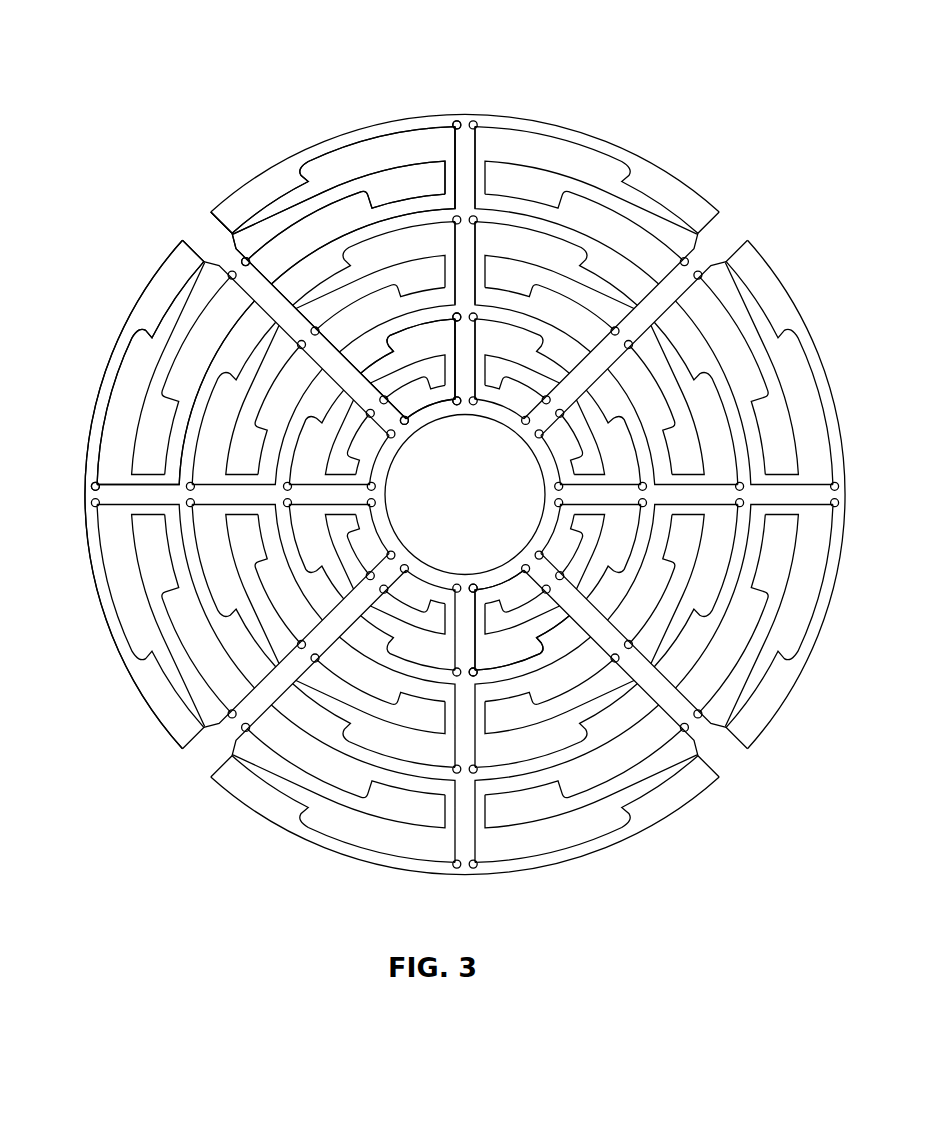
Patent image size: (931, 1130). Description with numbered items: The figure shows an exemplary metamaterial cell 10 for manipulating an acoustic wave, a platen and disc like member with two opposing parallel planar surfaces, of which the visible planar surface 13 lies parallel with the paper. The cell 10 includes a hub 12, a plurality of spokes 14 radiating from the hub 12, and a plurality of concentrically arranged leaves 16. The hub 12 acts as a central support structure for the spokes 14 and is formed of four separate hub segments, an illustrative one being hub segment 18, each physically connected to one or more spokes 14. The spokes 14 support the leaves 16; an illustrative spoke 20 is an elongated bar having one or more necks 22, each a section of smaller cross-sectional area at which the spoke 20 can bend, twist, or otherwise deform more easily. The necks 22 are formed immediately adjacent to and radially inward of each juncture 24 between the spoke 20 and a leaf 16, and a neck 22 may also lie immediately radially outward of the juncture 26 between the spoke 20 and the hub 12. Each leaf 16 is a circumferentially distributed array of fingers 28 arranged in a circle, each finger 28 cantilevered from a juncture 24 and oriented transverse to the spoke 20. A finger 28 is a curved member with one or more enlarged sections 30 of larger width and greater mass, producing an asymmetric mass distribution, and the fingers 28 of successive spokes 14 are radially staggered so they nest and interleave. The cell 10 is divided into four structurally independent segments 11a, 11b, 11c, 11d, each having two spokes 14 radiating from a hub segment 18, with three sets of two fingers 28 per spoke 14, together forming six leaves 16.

The metamaterial cell 10 is at (433, 453).
The segment 11a is at (600, 148).
The segment 11b is at (766, 716).
The segment 11c is at (320, 832).
The segment 11d is at (105, 388).
The hub 12 is at (428, 557).
The planar surface 13 is at (700, 196).
The spokes 14 is at (448, 156).
The leaves 16 is at (289, 138).
The hub segment 18 is at (513, 562).
The spoke 20 is at (225, 235).
The neck 22 is at (256, 263).
The juncture 24 is at (243, 266).
The juncture 26 is at (397, 436).
The fingers 28 is at (113, 338).
The enlarged section 30 is at (140, 277).